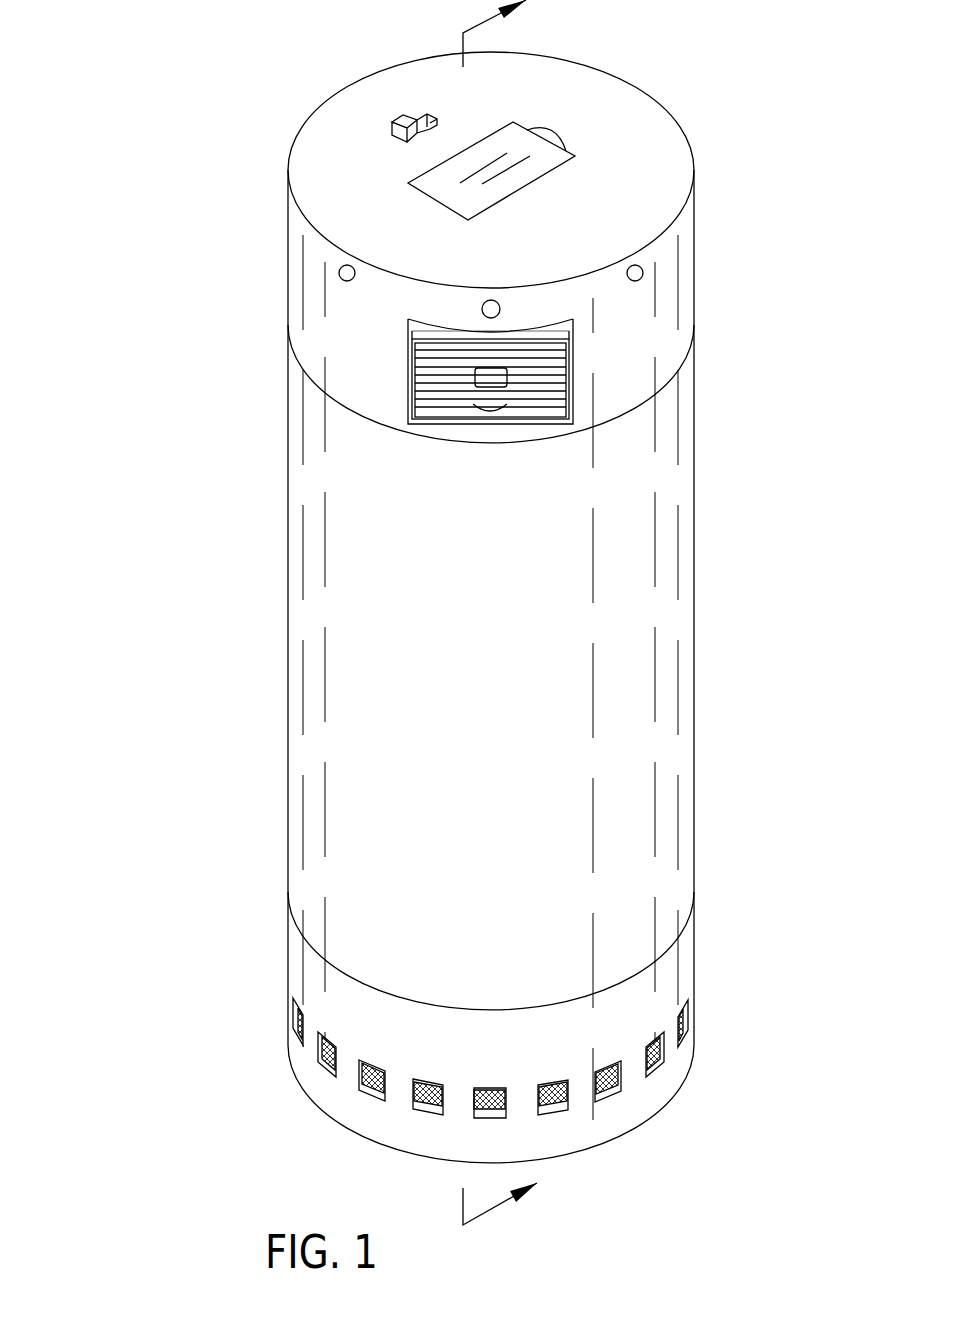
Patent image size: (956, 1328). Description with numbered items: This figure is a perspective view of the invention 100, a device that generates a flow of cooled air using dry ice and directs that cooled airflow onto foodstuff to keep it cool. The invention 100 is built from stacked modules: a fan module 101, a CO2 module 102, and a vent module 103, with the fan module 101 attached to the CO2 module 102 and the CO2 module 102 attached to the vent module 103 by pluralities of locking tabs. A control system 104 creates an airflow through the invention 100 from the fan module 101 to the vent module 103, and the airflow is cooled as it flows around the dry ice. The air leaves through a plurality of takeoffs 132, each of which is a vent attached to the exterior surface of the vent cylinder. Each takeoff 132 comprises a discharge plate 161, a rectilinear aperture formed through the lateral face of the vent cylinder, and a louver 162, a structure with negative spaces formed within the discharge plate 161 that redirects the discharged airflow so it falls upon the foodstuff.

The invention 100 is at (140, 74).
The fan module 101 is at (694, 970).
The CO2 module 102 is at (694, 650).
The vent module 103 is at (695, 267).
The control system 104 is at (493, 301).
The takeoff 132 is at (540, 423).
The discharge plate 161 is at (563, 330).
The louver 162 is at (518, 382).